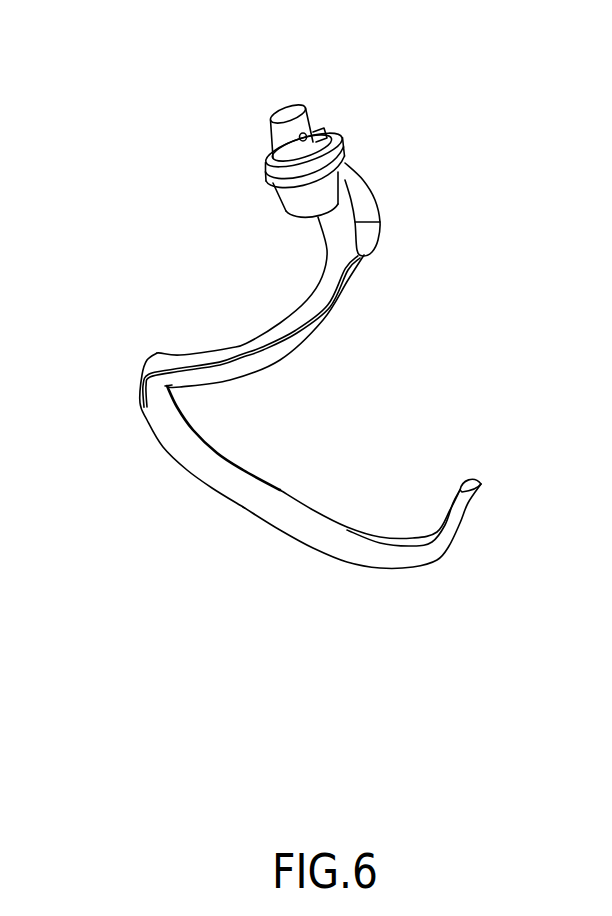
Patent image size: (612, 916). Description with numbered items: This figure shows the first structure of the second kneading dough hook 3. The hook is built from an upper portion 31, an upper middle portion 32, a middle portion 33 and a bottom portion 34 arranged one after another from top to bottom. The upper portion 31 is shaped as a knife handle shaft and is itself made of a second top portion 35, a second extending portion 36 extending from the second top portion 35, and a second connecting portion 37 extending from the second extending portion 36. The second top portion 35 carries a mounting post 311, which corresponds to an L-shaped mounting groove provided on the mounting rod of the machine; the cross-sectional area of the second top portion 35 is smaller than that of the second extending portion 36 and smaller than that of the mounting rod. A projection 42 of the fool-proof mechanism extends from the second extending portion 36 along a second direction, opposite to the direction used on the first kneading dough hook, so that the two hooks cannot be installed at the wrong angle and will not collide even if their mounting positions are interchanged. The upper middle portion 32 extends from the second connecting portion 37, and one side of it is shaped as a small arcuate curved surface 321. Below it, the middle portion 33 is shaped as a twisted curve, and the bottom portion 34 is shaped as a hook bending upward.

The second kneading dough hook 3 is at (372, 325).
The upper portion 31 is at (250, 138).
The mounting post 311 is at (312, 130).
The upper middle portion 32 is at (322, 230).
The small arcuate curved surface 321 is at (365, 203).
The middle portion 33 is at (147, 358).
The bottom portion 34 is at (477, 505).
The second top portion 35 is at (268, 127).
The second extending portion 36 is at (333, 148).
The second connecting portion 37 is at (287, 202).
The projection 42 is at (318, 132).